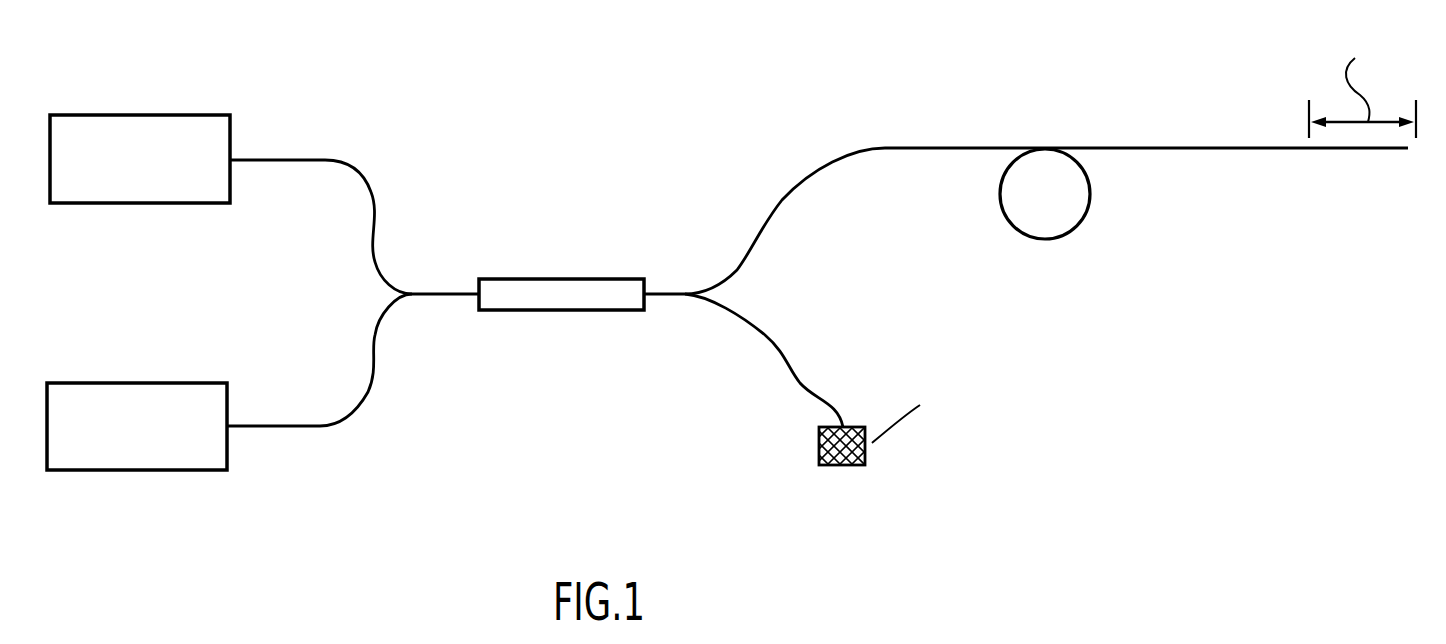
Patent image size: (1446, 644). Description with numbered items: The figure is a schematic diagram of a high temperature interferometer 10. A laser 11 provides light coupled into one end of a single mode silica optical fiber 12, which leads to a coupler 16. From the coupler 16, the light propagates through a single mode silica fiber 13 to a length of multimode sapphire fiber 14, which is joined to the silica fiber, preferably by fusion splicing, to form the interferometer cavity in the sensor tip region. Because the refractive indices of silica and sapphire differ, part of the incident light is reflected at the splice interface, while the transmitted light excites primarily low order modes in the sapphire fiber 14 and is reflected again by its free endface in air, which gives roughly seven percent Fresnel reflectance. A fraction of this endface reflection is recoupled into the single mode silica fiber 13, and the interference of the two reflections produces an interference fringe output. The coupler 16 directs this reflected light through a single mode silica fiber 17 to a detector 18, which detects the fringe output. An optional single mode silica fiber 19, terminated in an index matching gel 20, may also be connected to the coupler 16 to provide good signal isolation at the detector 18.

The high temperature interferometer 10 is at (622, 457).
The laser 11 is at (158, 203).
The single mode silica optical fiber 12 is at (370, 190).
The single mode silica fiber 13 is at (1112, 150).
The multimode sapphire fiber 14 is at (1367, 153).
The coupler 16 is at (555, 310).
The single mode silica fiber 17 is at (355, 415).
The detector 18 is at (158, 470).
The optional single mode silica fiber 19 is at (790, 352).
The index matching gel 20 is at (818, 445).